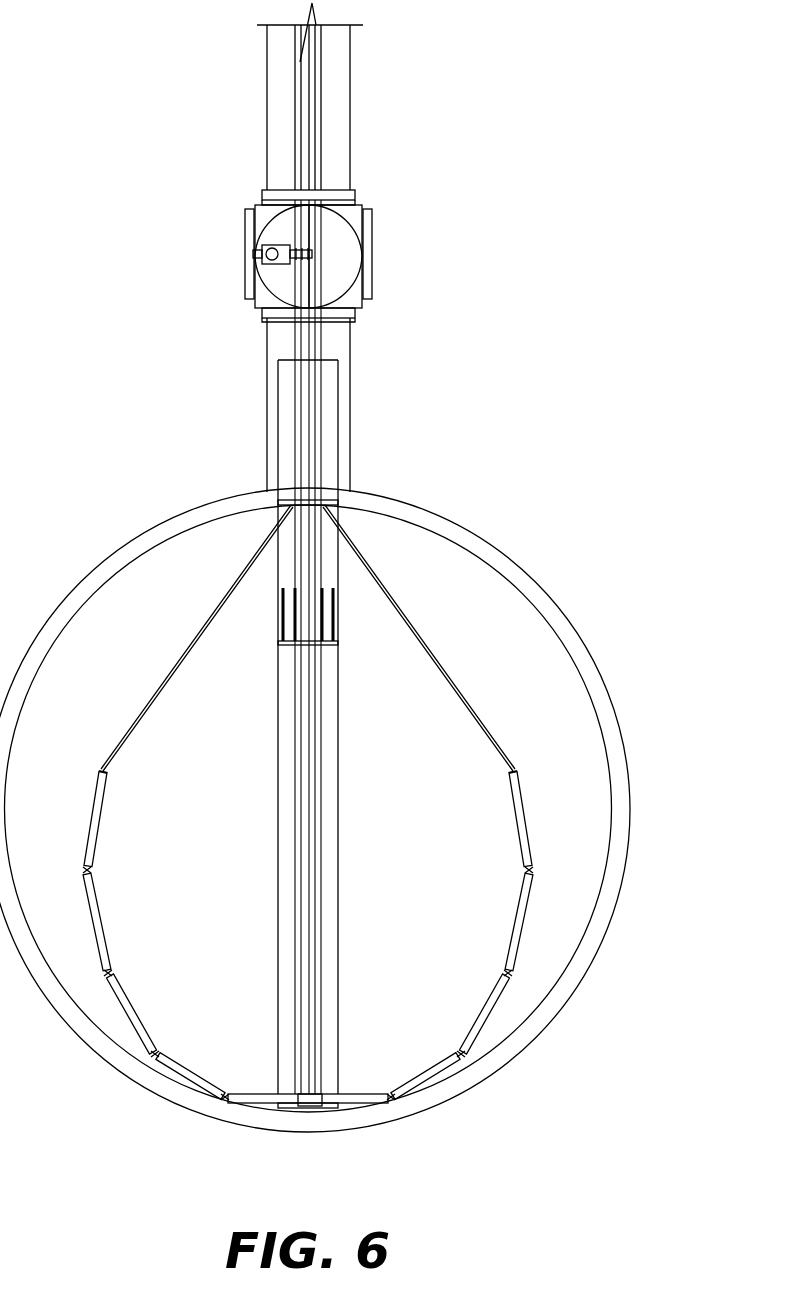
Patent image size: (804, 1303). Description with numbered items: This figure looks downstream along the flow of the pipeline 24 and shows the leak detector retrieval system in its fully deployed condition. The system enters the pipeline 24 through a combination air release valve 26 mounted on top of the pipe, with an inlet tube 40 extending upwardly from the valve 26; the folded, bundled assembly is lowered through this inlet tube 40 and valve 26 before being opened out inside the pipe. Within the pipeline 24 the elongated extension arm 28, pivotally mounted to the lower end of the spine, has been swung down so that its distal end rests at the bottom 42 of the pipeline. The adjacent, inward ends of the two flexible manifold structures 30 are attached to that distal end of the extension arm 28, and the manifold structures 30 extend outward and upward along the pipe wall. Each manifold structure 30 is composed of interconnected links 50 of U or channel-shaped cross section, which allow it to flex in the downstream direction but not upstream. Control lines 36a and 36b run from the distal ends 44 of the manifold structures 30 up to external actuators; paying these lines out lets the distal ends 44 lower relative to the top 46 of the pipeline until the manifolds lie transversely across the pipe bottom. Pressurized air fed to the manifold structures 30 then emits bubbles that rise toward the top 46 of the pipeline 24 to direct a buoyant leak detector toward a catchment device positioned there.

The inlet tube 40 is at (267, 89).
The combination air release valve 26 is at (372, 252).
The pipeline 24 is at (185, 516).
The top of the pipeline 46 is at (380, 526).
The control line 36a is at (178, 668).
The control line 36b is at (440, 668).
The distal ends of the manifold structures 44 is at (100, 769).
The manifold structure 30 is at (88, 820).
The link 50 is at (528, 820).
The extension arm 28 is at (307, 1103).
The bottom of the pipeline 42 is at (320, 1110).